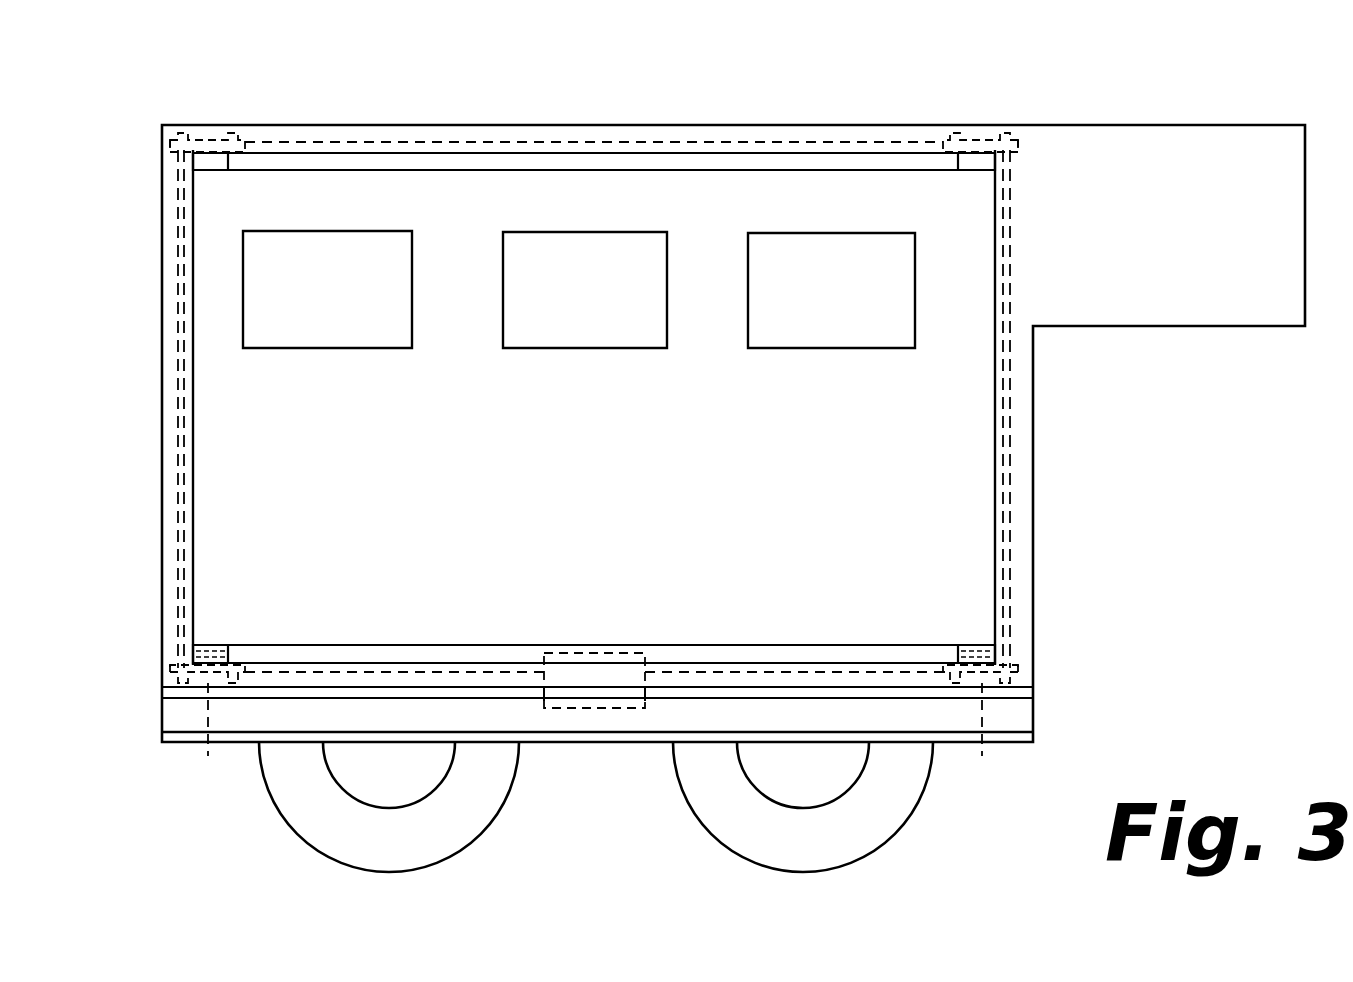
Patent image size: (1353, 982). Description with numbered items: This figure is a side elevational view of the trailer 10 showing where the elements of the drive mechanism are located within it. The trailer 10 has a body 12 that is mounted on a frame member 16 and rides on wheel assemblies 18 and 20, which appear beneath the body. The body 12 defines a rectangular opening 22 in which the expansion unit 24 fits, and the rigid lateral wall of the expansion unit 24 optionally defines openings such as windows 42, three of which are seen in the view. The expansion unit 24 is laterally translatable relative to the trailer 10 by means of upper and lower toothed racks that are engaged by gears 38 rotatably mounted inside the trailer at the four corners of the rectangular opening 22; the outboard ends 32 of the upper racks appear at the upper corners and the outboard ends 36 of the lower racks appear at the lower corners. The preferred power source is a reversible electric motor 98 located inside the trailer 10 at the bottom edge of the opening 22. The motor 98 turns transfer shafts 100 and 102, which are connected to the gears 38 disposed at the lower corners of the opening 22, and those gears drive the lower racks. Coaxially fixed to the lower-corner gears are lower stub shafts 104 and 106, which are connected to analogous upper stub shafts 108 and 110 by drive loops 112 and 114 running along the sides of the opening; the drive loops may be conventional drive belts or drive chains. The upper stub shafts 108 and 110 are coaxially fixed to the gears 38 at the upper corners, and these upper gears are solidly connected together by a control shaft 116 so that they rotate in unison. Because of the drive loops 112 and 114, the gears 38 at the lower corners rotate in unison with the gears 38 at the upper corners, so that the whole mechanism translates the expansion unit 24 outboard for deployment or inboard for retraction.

The trailer 10 is at (777, 108).
The body 12 is at (466, 125).
The frame member 16 is at (176, 745).
The wheel assembly 18 is at (913, 790).
The wheel assembly 20 is at (298, 811).
The rectangular opening 22 is at (1012, 240).
The expansion unit 24 is at (962, 479).
The outboard end of upper rack 32 is at (214, 158).
The outboard end of lower rack 36 is at (216, 644).
The gear 38 is at (222, 135).
The window 42 is at (368, 333).
The reversible electric motor 98 is at (601, 654).
The transfer shaft 100 is at (408, 665).
The transfer shaft 102 is at (776, 668).
The lower stub shaft 104 is at (170, 668).
The lower stub shaft 106 is at (1040, 666).
The upper stub shaft 108 is at (170, 141).
The upper stub shaft 110 is at (1018, 142).
The drive loop 112 is at (176, 300).
The drive loop 114 is at (1012, 277).
The control shaft 116 is at (608, 140).